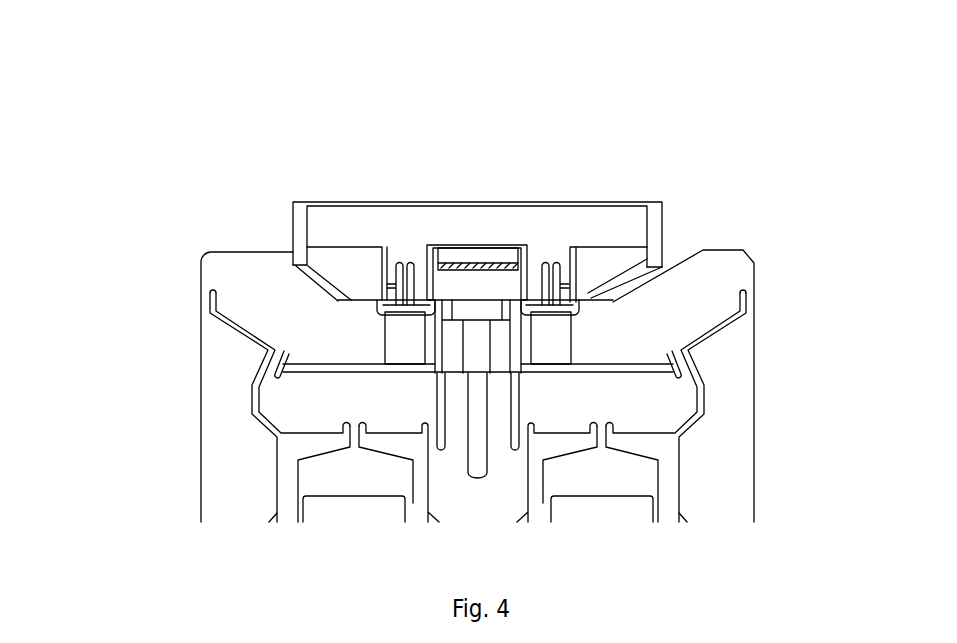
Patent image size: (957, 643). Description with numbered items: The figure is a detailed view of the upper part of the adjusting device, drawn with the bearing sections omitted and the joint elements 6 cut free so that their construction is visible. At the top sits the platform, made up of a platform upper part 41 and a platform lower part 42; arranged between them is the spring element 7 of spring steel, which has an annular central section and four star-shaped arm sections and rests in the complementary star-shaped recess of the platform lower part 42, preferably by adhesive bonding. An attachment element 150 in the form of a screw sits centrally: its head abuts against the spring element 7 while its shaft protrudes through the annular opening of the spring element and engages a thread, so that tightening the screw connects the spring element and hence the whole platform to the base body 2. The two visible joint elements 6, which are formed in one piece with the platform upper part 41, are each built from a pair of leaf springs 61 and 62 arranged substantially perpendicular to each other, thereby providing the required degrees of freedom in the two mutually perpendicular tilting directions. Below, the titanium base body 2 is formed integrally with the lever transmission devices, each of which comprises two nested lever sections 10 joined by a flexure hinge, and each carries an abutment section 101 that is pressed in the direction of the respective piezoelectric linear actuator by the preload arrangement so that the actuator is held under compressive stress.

The base body 2 is at (225, 400).
The joint element 6 is at (405, 253).
The spring element 7 is at (533, 242).
The lever section 10 is at (693, 303).
The platform upper part 41 is at (608, 215).
The platform lower part 42 is at (357, 257).
The leaf spring 61 is at (403, 335).
The leaf spring 62 is at (337, 298).
The abutment section 101 is at (340, 473).
The attachment element 150 is at (480, 253).